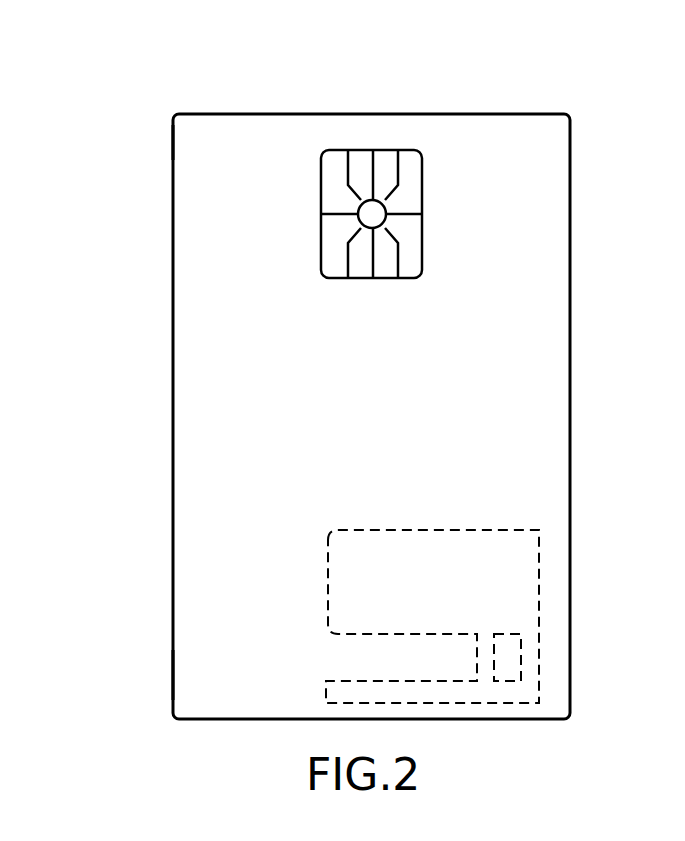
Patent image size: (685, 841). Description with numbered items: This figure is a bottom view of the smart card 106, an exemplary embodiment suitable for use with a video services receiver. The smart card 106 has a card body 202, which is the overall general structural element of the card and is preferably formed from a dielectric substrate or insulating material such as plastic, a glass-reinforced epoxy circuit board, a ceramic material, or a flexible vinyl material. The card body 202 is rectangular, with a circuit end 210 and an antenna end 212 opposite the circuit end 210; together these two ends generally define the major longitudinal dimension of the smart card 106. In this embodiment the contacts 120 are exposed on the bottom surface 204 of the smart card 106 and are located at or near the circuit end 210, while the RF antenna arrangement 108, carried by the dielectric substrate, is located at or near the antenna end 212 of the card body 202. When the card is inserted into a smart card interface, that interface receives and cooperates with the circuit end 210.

The smart card 106 is at (268, 96).
The RF antenna arrangement 108 is at (316, 512).
The contacts 120 is at (422, 178).
The card body 202 is at (528, 335).
The bottom surface 204 is at (457, 397).
The circuit end 210 is at (150, 140).
The antenna end 212 is at (150, 670).